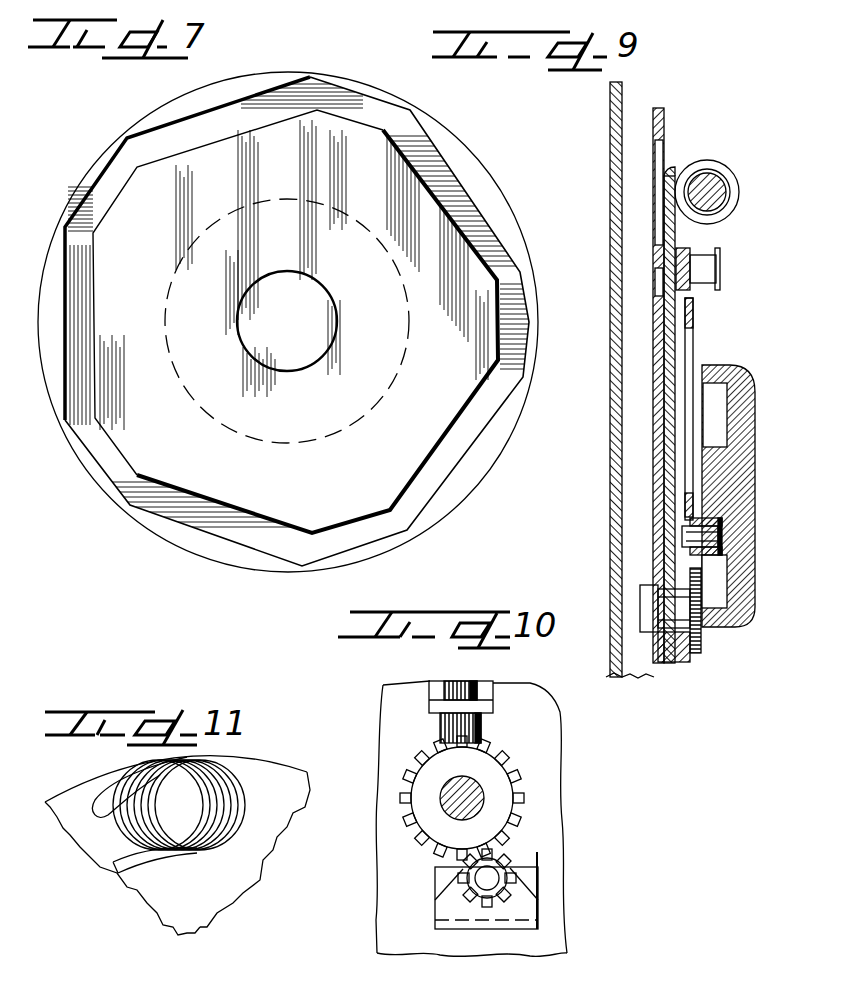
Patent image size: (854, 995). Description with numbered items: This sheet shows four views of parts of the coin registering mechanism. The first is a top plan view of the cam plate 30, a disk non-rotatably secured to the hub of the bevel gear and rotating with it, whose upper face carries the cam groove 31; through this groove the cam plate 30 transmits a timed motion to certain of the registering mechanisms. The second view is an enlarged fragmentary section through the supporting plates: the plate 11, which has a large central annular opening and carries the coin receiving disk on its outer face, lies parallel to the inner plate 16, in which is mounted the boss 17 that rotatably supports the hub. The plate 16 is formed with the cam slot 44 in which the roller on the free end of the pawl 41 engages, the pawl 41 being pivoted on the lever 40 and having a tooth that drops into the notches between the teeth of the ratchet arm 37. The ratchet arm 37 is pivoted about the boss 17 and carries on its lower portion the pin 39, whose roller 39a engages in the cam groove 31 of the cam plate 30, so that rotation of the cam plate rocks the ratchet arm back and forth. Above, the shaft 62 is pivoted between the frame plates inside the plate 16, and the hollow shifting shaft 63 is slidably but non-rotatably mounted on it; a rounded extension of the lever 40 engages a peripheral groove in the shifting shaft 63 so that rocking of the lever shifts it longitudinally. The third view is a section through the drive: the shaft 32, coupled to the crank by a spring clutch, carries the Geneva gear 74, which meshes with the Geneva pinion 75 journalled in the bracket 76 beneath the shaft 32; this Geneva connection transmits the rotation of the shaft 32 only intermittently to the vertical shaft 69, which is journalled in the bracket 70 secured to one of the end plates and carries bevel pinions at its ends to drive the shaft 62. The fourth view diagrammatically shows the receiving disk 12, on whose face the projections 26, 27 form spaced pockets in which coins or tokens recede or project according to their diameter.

In FIG. 7, the cam plate 30 is at (482, 189).
In FIG. 9, the cam plate 30 is at (750, 536).
In FIG. 7, the cam groove 31 is at (487, 237).
In FIG. 9, the plate 11 is at (621, 102).
In FIG. 9, the plate 16 is at (665, 128).
In FIG. 9, the cam slot 44 is at (655, 283).
In FIG. 9, the lever 40 is at (676, 231).
In FIG. 9, the hollow shifting shaft 63 is at (722, 170).
In FIG. 9, the shaft 62 is at (721, 196).
In FIG. 9, the pawl 41 is at (684, 272).
In FIG. 9, the ratchet arm 37 is at (688, 343).
In FIG. 9, the roller 39a is at (708, 518).
In FIG. 9, the pin 39 is at (706, 555).
In FIG. 9, the boss 17 is at (677, 607).
In FIG. 10, the bracket 76 is at (453, 894).
In FIG. 10, the bracket 70 is at (488, 705).
In FIG. 10, the vertical shaft 69 is at (446, 690).
In FIG. 10, the Geneva gear 74 is at (402, 790).
In FIG. 10, the shaft 32 is at (474, 803).
In FIG. 10, the Geneva pinion 75 is at (492, 877).
In FIG. 11, the coin carrying or receiving disk 12 is at (293, 781).
In FIG. 11, the projection 27 is at (120, 773).
In FIG. 11, the projection 26 is at (148, 855).